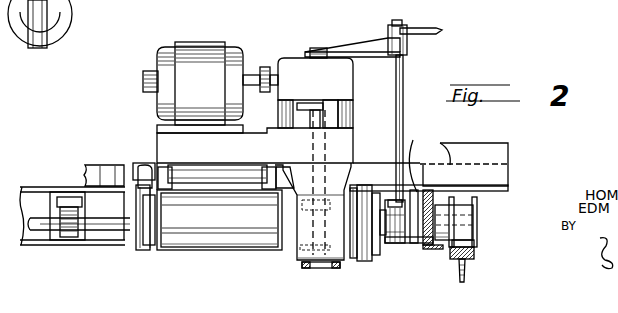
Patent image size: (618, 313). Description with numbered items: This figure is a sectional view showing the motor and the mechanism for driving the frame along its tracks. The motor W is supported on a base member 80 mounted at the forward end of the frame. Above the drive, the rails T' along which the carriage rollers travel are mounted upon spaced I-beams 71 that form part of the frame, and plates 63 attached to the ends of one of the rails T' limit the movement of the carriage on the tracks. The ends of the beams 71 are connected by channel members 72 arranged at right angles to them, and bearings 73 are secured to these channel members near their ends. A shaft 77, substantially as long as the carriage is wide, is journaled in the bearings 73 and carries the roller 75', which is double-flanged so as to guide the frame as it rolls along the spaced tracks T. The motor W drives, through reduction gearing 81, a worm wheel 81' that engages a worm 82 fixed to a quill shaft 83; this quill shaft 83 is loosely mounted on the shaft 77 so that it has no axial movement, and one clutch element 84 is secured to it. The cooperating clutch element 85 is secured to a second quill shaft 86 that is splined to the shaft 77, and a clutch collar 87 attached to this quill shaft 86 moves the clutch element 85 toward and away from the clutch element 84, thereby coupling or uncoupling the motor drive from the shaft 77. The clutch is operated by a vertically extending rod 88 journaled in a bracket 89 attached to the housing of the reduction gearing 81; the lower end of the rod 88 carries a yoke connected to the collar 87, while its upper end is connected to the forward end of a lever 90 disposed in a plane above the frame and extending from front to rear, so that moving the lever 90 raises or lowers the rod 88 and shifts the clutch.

The motor W is at (178, 69).
The base member 80 is at (166, 142).
The rails T' is at (91, 161).
The I-beams 71 is at (32, 195).
The shaft 77 is at (173, 222).
The reduction gearing 81 is at (312, 55).
The worm wheel 81' is at (357, 115).
The bracket 89 is at (372, 42).
The lever 90 is at (418, 30).
The rod 88 is at (404, 86).
The quill shaft 86 is at (450, 165).
The plates 63 is at (493, 150).
The channel members 72 is at (431, 193).
The bearings 73 is at (465, 214).
The roller 75' is at (481, 228).
The tracks T is at (480, 268).
The worm 82 is at (300, 248).
The clutch element 84 is at (343, 269).
The quill shaft 83 is at (305, 198).
The clutch element 85 is at (376, 252).
The clutch collar 87 is at (399, 235).